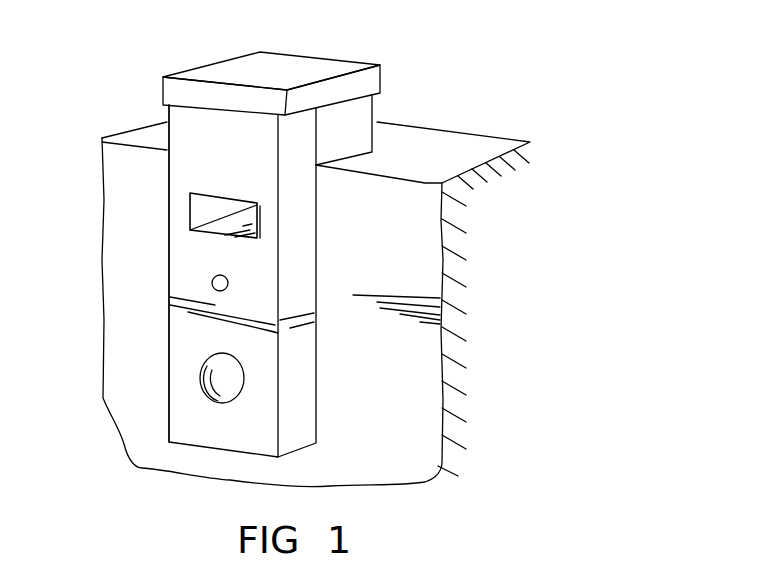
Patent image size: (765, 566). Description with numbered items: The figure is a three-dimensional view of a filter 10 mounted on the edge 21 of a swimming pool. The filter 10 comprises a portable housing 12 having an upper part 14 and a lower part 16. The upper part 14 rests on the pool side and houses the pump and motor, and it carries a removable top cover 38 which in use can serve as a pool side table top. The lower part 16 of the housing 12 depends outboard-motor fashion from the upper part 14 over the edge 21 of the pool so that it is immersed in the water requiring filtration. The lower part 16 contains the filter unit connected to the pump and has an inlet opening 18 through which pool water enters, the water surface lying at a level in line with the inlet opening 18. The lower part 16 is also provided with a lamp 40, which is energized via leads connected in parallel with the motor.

The filter 10 is at (448, 38).
The portable housing 12 is at (157, 112).
The upper part 14 is at (343, 130).
The lower part 16 is at (152, 250).
The inlet opening 18 is at (190, 194).
The edge 21 is at (424, 198).
The top cover 38 is at (255, 72).
The lamp 40 is at (222, 374).